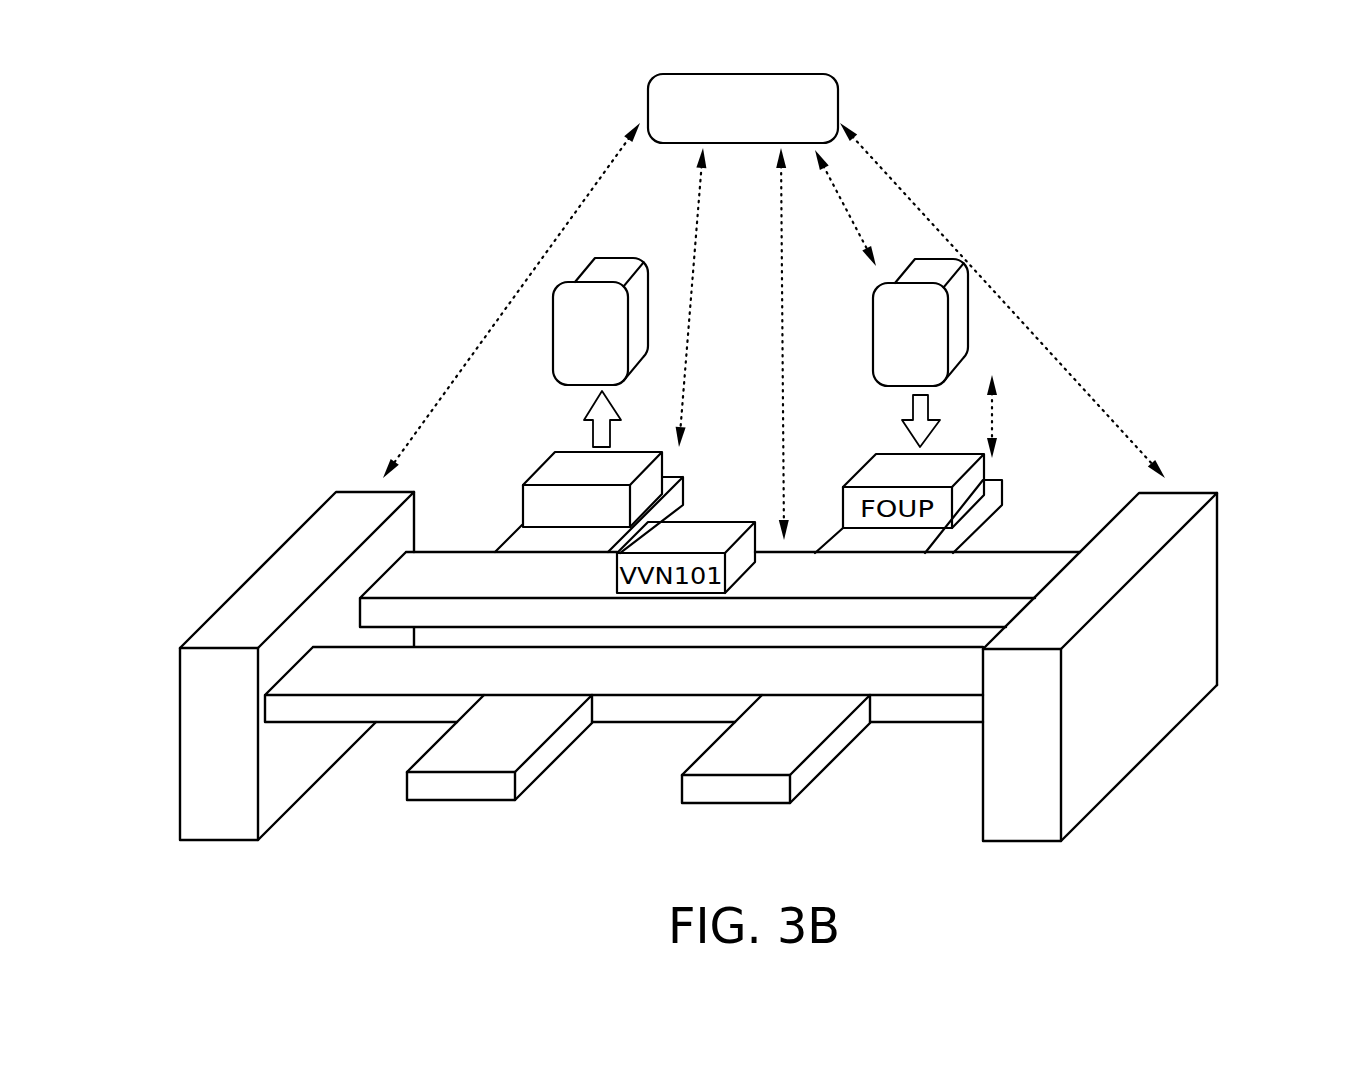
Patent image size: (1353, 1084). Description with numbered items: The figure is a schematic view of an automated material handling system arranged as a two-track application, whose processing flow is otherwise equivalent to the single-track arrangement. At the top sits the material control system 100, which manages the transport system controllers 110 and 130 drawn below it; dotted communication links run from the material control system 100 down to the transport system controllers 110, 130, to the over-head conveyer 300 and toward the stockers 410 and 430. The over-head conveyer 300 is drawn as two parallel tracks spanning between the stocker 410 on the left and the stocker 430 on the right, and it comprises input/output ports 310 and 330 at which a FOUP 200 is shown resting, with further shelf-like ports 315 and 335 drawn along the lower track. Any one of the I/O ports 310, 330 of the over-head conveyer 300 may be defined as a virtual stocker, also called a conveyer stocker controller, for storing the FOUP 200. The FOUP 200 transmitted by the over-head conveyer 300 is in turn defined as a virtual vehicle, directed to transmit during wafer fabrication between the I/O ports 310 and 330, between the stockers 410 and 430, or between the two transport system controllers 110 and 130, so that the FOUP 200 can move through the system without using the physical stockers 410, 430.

The material control system 100 is at (838, 106).
The transport system controller 110 is at (630, 258).
The transport system controller 130 is at (873, 332).
The FOUP 200 is at (527, 468).
The over-head conveyer 300 is at (796, 552).
The input/output port 310 is at (517, 528).
The shelf 315 is at (458, 801).
The input/output port 330 is at (1004, 492).
The shelf 335 is at (738, 804).
The stocker 410 is at (179, 742).
The stocker 430 is at (1220, 592).